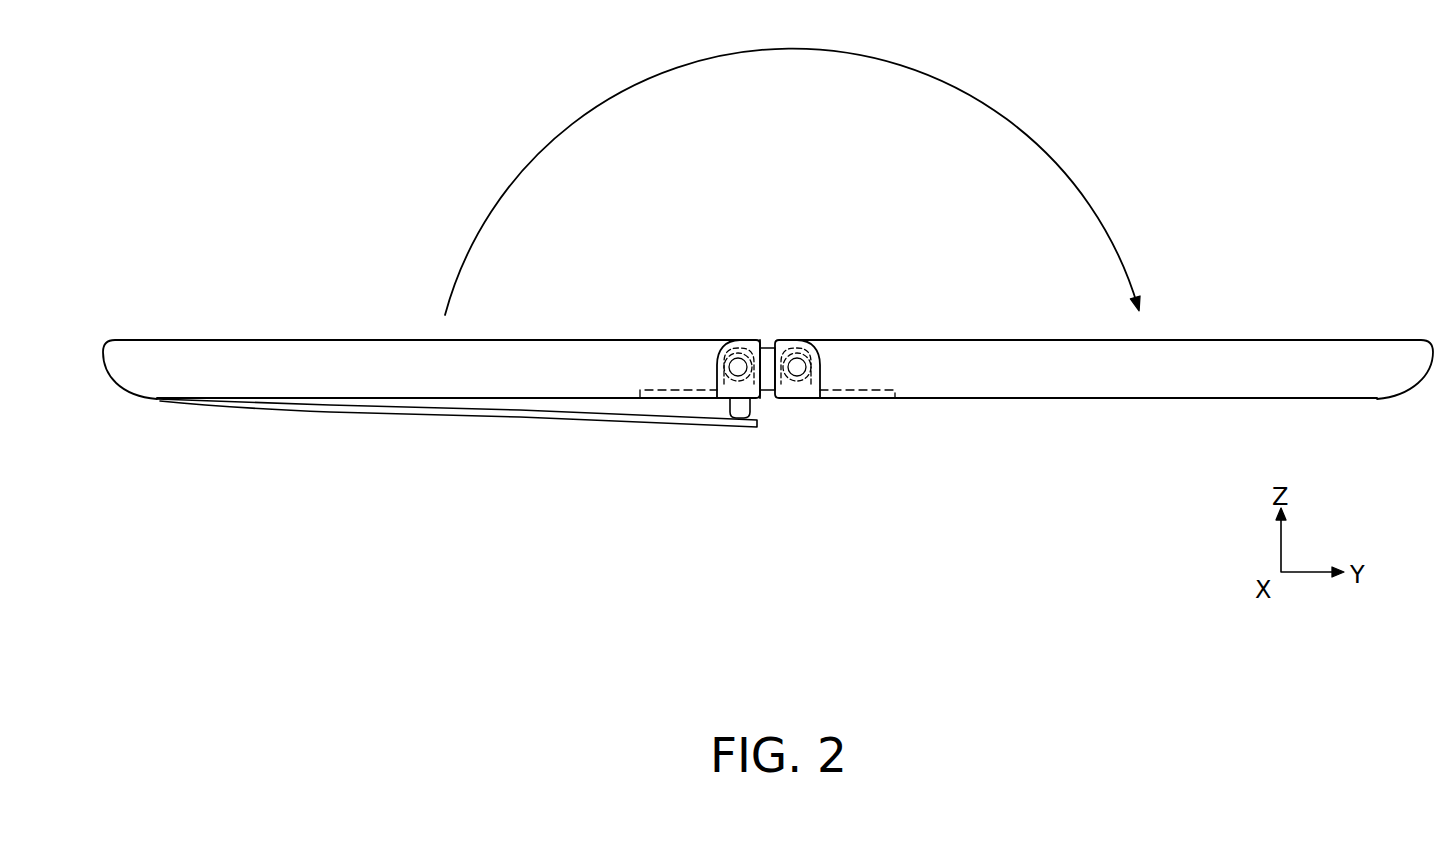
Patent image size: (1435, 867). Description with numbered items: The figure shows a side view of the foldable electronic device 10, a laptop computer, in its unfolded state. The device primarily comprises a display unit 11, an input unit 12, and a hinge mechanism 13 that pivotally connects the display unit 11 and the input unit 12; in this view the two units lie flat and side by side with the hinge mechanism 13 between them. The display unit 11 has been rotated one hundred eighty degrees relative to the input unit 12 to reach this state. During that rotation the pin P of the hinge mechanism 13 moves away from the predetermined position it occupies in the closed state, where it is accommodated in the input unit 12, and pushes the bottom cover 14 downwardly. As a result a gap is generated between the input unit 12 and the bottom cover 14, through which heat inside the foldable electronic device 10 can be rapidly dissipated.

The foldable electronic device 10 is at (203, 218).
The display unit 11 is at (1338, 350).
The input unit 12 is at (197, 350).
The hinge mechanism 13 is at (767, 347).
The bottom cover 14 is at (551, 418).
The pin P is at (741, 428).